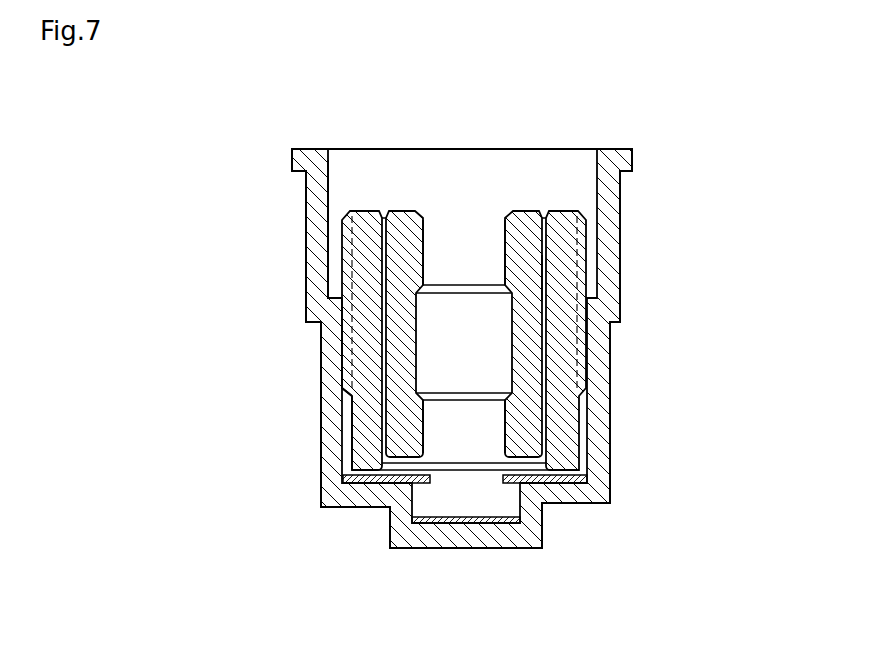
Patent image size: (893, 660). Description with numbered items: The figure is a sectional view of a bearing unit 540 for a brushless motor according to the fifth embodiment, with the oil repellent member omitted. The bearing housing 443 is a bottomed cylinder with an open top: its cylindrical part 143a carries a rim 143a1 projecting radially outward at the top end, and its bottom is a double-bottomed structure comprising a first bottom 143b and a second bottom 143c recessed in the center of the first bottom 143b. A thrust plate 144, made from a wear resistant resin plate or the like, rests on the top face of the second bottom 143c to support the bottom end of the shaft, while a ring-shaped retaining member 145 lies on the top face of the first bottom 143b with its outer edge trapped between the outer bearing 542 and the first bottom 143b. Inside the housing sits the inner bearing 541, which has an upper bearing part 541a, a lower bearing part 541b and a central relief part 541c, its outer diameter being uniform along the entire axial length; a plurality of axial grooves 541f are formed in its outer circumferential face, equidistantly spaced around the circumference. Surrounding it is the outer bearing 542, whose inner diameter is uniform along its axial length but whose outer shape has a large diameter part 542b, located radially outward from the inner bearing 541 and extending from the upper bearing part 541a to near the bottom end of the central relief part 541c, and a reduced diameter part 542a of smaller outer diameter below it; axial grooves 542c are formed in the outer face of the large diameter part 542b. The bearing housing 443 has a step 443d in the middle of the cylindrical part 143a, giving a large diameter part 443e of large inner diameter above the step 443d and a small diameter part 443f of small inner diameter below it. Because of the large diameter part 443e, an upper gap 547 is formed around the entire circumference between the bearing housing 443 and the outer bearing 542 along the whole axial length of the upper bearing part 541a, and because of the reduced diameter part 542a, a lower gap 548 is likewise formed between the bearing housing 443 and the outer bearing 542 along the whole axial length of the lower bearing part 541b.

The bearing unit 540 is at (594, 120).
The inner bearing 541 is at (522, 207).
The upper bearing part 541a is at (463, 233).
The lower bearing part 541b is at (464, 440).
The central relief part 541c is at (487, 350).
The grooves 541f is at (558, 280).
The outer bearing 542 is at (568, 207).
The reduced diameter part 542a is at (365, 420).
The large diameter part 542b is at (363, 293).
The grooves 542c is at (345, 353).
The bearing housing 443 is at (302, 207).
The step 443d is at (302, 298).
The large diameter part 443e is at (312, 229).
The small diameter part 443f is at (353, 392).
The cylindrical part 143a is at (624, 242).
The rim 143a1 is at (633, 157).
The first bottom 143b is at (580, 500).
The second bottom 143c is at (500, 538).
The thrust plate 144 is at (410, 520).
The retaining member 145 is at (338, 478).
The upper gap 547 is at (333, 237).
The lower gap 548 is at (322, 432).